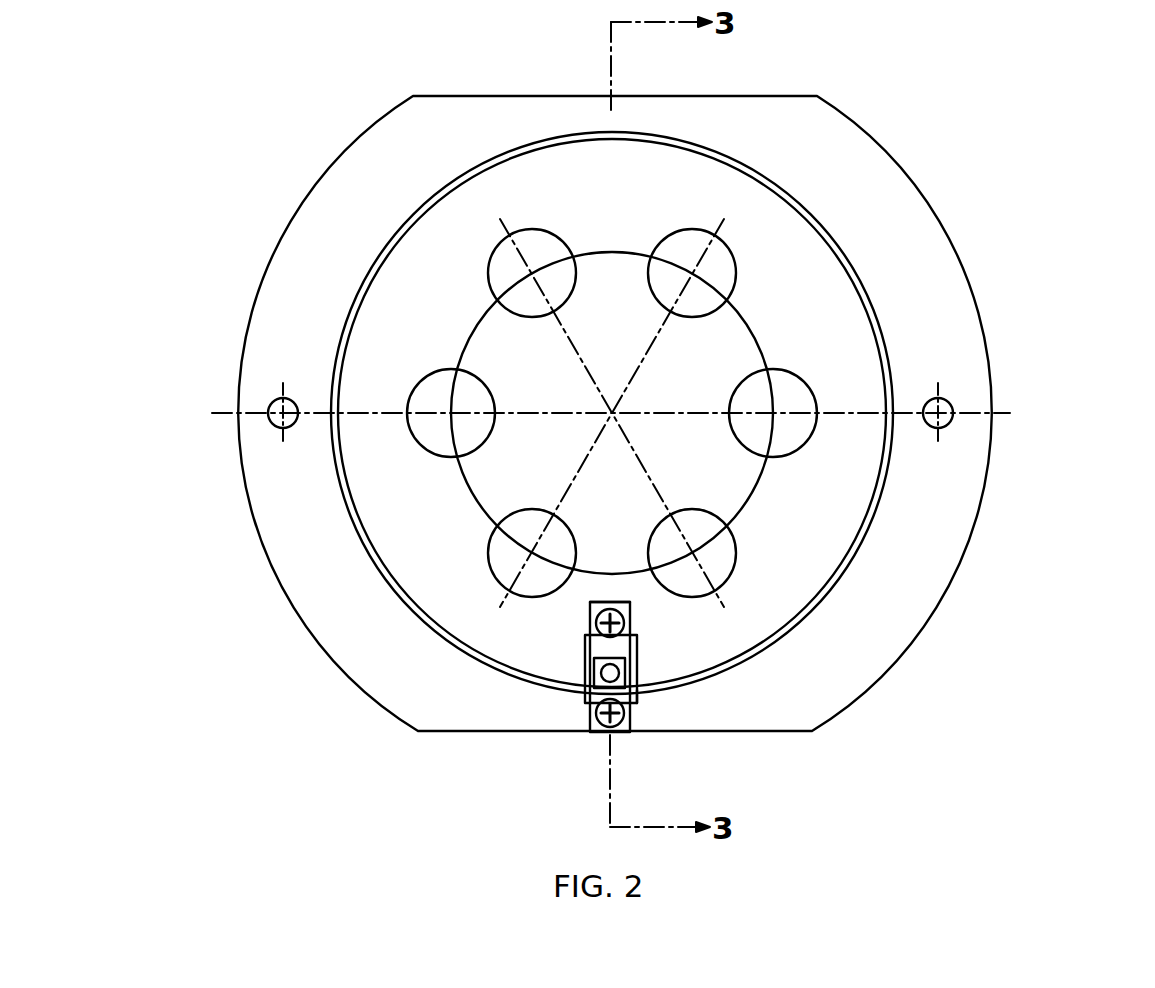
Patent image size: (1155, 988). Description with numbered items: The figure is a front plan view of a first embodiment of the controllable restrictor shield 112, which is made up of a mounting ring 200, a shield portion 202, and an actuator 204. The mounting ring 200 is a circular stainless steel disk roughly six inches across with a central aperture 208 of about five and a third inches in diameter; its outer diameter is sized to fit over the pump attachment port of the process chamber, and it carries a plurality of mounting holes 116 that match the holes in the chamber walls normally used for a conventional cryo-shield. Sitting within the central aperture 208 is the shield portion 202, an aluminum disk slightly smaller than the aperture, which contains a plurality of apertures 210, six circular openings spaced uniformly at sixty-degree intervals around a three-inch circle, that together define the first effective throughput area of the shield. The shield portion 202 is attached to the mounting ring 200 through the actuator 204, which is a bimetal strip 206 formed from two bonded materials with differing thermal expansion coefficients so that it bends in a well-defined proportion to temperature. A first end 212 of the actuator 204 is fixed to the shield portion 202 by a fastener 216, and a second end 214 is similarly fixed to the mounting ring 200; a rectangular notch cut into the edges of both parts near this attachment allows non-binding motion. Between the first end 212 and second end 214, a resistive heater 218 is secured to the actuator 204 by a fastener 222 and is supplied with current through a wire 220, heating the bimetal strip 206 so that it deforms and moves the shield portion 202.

The controllable restrictor shield 112 is at (1000, 242).
The mounting holes 116 is at (272, 405).
The mounting ring 200 is at (945, 535).
The shield portion 202 is at (845, 509).
The actuator 204 is at (568, 812).
The bimetal strip 206 is at (637, 700).
The central aperture 208 is at (527, 160).
The apertures 210 is at (742, 282).
The first end 212 is at (630, 618).
The second end 214 is at (592, 735).
The fastener 216 is at (597, 620).
The resistive heater 218 is at (585, 695).
The wire 220 is at (620, 682).
The fastener 222 is at (637, 690).